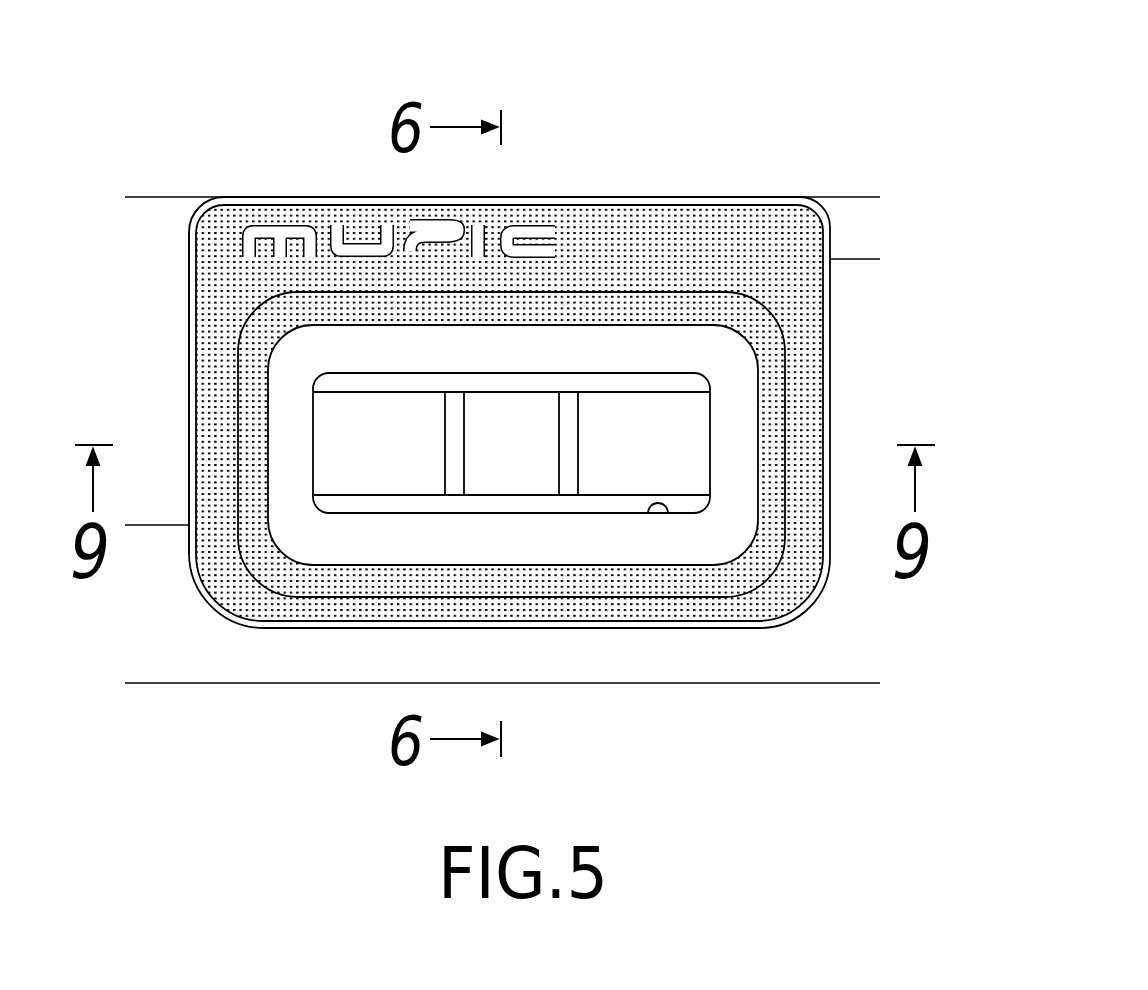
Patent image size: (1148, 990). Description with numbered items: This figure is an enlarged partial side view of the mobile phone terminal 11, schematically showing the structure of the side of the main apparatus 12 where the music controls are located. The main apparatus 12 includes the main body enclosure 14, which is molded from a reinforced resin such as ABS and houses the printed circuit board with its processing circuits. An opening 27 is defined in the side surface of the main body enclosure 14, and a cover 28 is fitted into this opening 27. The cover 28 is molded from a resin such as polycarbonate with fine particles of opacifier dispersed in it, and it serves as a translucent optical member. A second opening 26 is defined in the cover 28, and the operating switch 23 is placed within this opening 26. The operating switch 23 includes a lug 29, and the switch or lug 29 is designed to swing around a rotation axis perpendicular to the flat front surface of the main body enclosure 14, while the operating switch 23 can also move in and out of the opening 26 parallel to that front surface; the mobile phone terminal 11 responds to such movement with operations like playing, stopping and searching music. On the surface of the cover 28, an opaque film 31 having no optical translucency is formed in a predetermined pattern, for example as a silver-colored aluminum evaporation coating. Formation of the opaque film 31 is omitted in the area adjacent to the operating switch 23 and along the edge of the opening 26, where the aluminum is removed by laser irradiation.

The mobile phone terminal 11 is at (795, 118).
The main apparatus 12 is at (172, 197).
The main body enclosure 14 is at (818, 198).
The operating switch 23 is at (706, 428).
The opening 26 is at (652, 506).
The opening 27 is at (193, 300).
The cover 28 is at (672, 232).
The lug 29 is at (537, 487).
The opaque film 31 is at (793, 575).